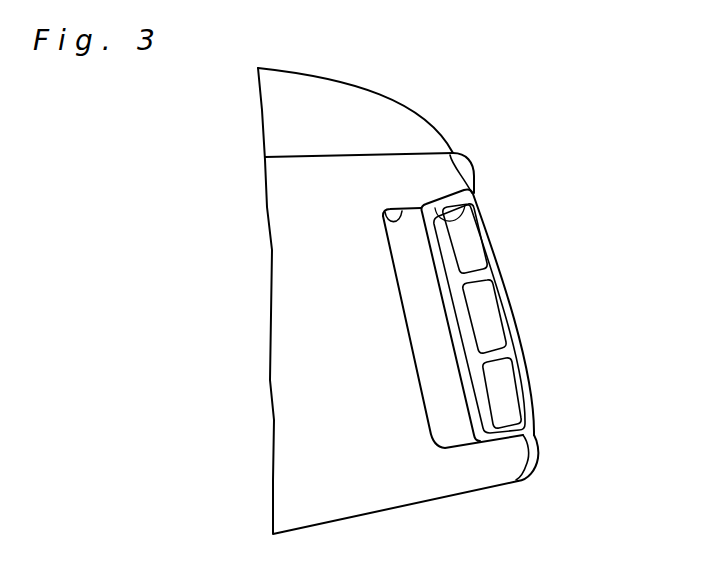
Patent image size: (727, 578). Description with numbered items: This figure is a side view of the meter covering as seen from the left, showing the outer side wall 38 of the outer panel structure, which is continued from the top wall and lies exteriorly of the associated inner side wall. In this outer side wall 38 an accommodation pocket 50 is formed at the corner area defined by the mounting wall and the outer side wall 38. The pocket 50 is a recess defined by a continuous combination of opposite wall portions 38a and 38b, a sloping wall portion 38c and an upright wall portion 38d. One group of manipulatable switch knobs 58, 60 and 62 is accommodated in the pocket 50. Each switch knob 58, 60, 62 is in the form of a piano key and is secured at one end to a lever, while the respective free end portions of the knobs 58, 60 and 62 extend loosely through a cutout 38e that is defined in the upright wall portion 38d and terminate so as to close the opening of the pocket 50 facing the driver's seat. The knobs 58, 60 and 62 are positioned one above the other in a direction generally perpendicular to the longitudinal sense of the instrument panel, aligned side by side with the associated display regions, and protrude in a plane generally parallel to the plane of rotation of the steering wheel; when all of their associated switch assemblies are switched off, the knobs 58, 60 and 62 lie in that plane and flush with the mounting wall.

The outer side wall 38 is at (373, 497).
The wall portion 38a is at (384, 223).
The wall portion 38b is at (460, 448).
The sloping wall portion 38c is at (427, 370).
The upright wall portion 38d is at (443, 295).
The cutout 38e is at (472, 190).
The accommodation pocket 50 is at (445, 393).
The switch knob 58 is at (468, 240).
The switch knob 60 is at (487, 320).
The switch knob 62 is at (505, 393).